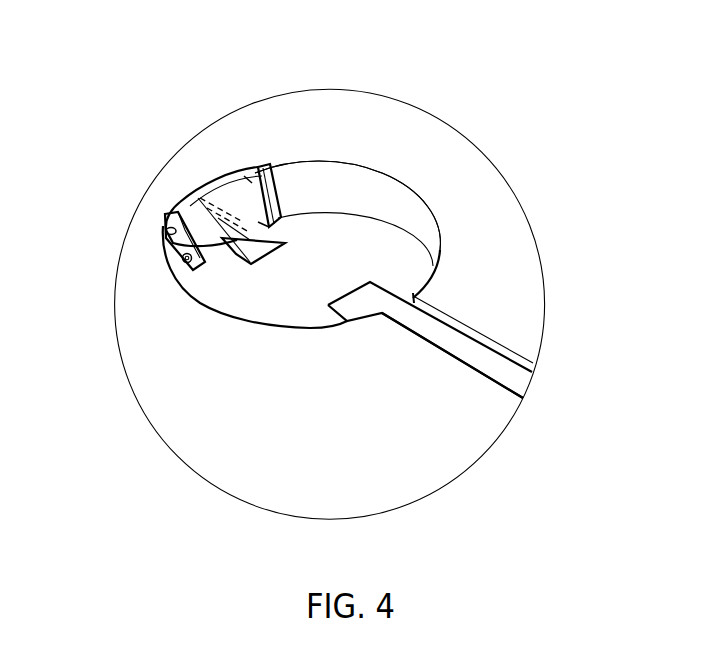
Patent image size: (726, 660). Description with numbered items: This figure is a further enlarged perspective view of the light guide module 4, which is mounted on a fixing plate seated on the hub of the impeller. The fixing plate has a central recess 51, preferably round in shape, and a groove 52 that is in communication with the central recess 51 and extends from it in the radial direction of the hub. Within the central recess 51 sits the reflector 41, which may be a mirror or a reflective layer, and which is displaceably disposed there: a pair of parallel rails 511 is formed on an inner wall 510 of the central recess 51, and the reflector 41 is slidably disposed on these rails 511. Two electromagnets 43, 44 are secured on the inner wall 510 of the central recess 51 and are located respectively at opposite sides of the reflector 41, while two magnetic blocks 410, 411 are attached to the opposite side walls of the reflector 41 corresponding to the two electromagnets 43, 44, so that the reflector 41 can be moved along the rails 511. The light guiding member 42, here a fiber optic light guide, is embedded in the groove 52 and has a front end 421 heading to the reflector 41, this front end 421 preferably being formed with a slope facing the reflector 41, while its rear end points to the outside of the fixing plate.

The light guide module 4 is at (322, 250).
The reflector 41 is at (224, 225).
The magnetic block 410 is at (270, 228).
The magnetic block 411 is at (195, 220).
The electromagnet 43 is at (272, 193).
The electromagnet 44 is at (168, 242).
The rails 511 is at (247, 180).
The light guiding member 42 is at (430, 284).
The front end 421 is at (347, 293).
The central recess 51 is at (222, 299).
The inner wall 510 is at (338, 188).
The groove 52 is at (487, 373).